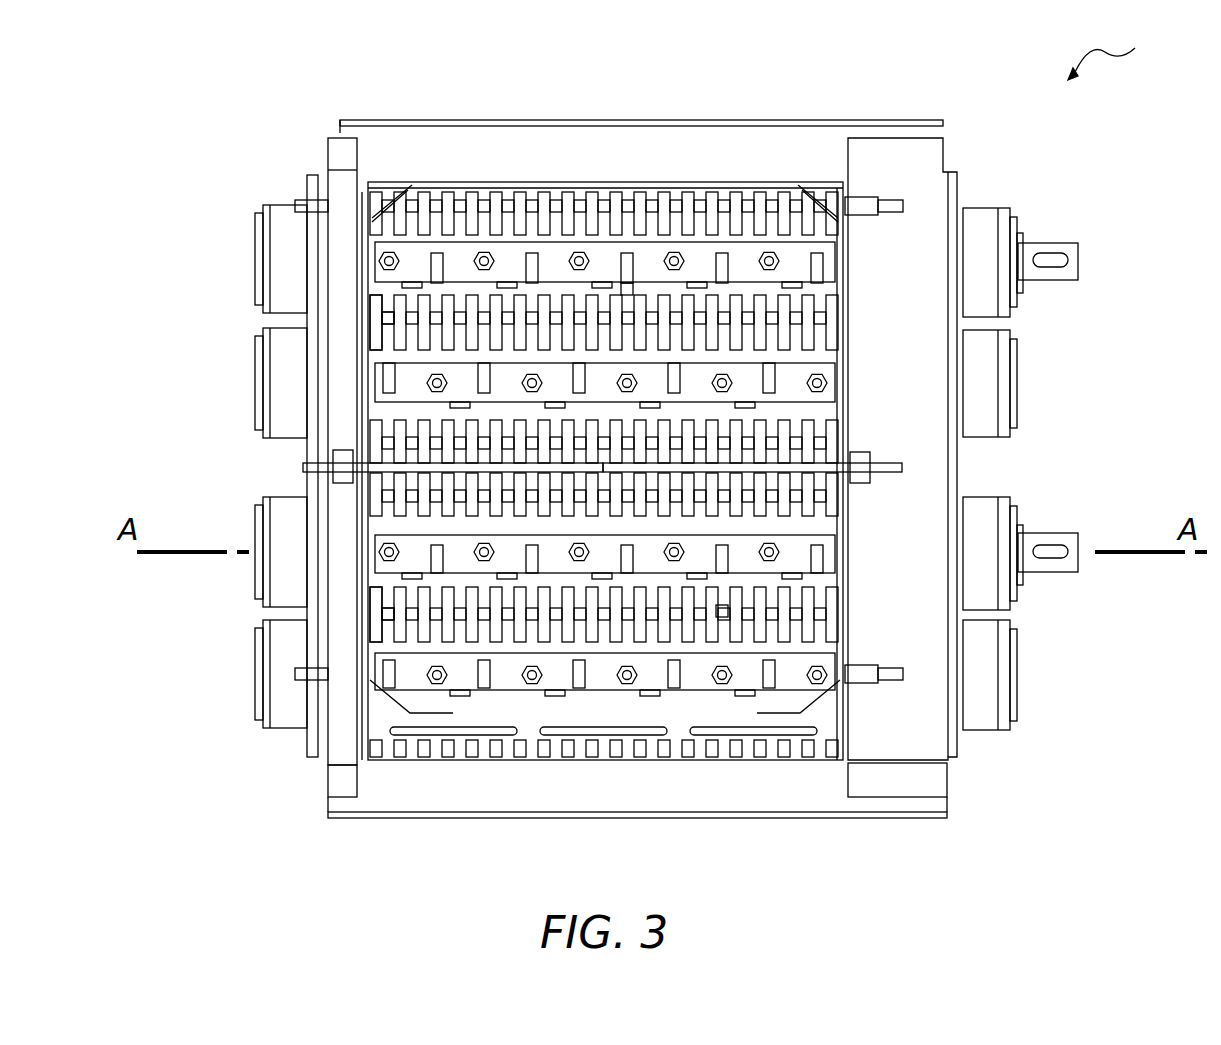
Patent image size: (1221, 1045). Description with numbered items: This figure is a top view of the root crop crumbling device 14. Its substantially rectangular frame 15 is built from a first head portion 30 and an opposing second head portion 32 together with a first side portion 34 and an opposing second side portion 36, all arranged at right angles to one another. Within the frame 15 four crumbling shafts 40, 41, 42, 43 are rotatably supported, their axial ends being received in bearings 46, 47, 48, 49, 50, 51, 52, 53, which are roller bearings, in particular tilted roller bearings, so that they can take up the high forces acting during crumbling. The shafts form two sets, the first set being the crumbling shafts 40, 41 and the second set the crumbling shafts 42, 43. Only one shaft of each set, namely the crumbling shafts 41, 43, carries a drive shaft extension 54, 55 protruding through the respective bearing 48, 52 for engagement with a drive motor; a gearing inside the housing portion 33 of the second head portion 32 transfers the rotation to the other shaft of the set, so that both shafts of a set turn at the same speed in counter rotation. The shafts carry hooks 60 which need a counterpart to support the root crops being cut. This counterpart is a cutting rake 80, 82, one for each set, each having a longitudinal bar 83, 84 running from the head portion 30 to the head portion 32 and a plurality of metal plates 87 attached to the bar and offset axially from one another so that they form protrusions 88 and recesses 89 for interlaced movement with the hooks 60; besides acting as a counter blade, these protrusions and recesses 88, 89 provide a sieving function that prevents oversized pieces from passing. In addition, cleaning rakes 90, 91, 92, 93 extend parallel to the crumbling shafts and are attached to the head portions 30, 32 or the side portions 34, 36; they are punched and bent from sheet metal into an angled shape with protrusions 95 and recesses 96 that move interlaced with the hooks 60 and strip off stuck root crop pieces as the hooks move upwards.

The device 14 is at (1115, 56).
The frame 15 is at (341, 130).
The first head portion 30 is at (335, 235).
The second head portion 32 is at (930, 188).
The housing portion 33 is at (930, 745).
The first side portion 34 is at (522, 785).
The second side portion 36 is at (400, 160).
The crumbling shaft 40 is at (463, 678).
The crumbling shaft 41 is at (507, 555).
The crumbling shaft 42 is at (466, 378).
The crumbling shaft 43 is at (510, 258).
The bearing 46 is at (985, 720).
The bearing 47 is at (283, 720).
The bearing 48 is at (990, 523).
The bearing 49 is at (283, 523).
The bearing 50 is at (990, 405).
The bearing 51 is at (285, 405).
The bearing 52 is at (985, 215).
The bearing 53 is at (285, 210).
The drive shaft extension 54 is at (1058, 560).
The drive shaft extension 55 is at (1058, 248).
The hook 60 is at (627, 275).
The cutting rake 80 is at (735, 707).
The cutting rake 82 is at (735, 305).
The longitudinal bar 83 is at (398, 598).
The longitudinal bar 84 is at (400, 322).
The metal plate 87 is at (400, 335).
The protrusion 88 is at (540, 290).
The recess 89 is at (582, 318).
The cleaning rake 90 is at (780, 750).
The cleaning rake 91 is at (380, 495).
The cleaning rake 92 is at (800, 440).
The cleaning rake 93 is at (820, 195).
The protrusion 95 is at (680, 190).
The recess 96 is at (770, 220).